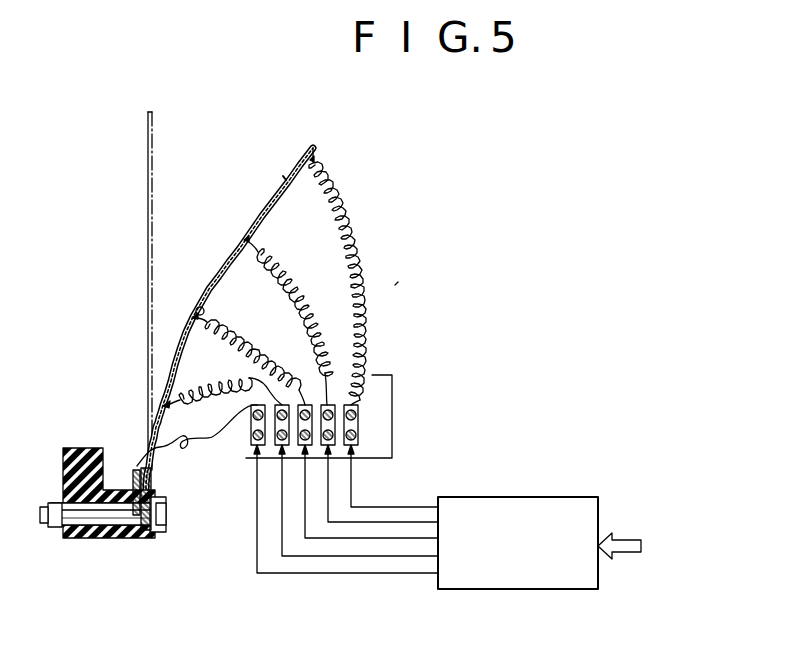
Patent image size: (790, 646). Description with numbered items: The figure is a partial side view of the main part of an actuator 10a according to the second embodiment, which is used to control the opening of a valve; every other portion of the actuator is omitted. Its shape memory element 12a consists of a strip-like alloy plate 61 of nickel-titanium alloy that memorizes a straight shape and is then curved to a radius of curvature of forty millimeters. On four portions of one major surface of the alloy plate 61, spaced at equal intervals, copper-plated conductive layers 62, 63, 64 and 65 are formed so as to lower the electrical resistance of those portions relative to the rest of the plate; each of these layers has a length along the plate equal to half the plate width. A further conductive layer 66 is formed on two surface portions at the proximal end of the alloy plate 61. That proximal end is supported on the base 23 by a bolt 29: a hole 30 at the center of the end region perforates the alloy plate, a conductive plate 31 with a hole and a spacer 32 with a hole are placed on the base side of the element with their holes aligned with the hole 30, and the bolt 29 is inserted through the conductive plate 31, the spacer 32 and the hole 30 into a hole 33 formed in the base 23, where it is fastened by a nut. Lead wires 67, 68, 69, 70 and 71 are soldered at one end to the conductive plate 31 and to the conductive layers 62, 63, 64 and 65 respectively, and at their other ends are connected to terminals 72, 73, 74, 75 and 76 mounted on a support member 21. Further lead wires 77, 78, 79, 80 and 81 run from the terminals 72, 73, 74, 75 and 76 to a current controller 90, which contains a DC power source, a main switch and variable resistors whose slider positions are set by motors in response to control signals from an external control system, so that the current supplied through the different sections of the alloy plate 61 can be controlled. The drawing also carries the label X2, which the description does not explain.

The undeflected axis reference line X2 is at (150, 112).
The shape memory element 12a is at (233, 222).
The alloy plate 61 is at (284, 178).
The actuator 10a is at (395, 285).
The conductive layer 65 is at (312, 160).
The conductive layer 64 is at (249, 240).
The conductive layer 63 is at (200, 311).
The conductive layer 62 is at (163, 406).
The lead wire 71 is at (351, 246).
The lead wire 70 is at (313, 320).
The lead wire 69 is at (241, 335).
The lead wire 68 is at (193, 393).
The lead wire 67 is at (206, 438).
The support member 21 is at (393, 390).
The terminal 72 is at (250, 448).
The terminal 73 is at (277, 446).
The terminal 74 is at (305, 446).
The terminal 75 is at (330, 446).
The terminal 76 is at (359, 442).
The lead wire 77 is at (263, 574).
The lead wire 78 is at (320, 558).
The lead wire 79 is at (379, 540).
The lead wire 80 is at (424, 523).
The lead wire 81 is at (423, 507).
The current controller 90 is at (528, 497).
The base 23 is at (63, 456).
The bolt 29 is at (167, 520).
The hole 30 is at (160, 540).
The conductive plate 31 is at (138, 540).
The spacer 32 is at (112, 538).
The hole 33 is at (80, 540).
The conductive layer 66 is at (153, 495).